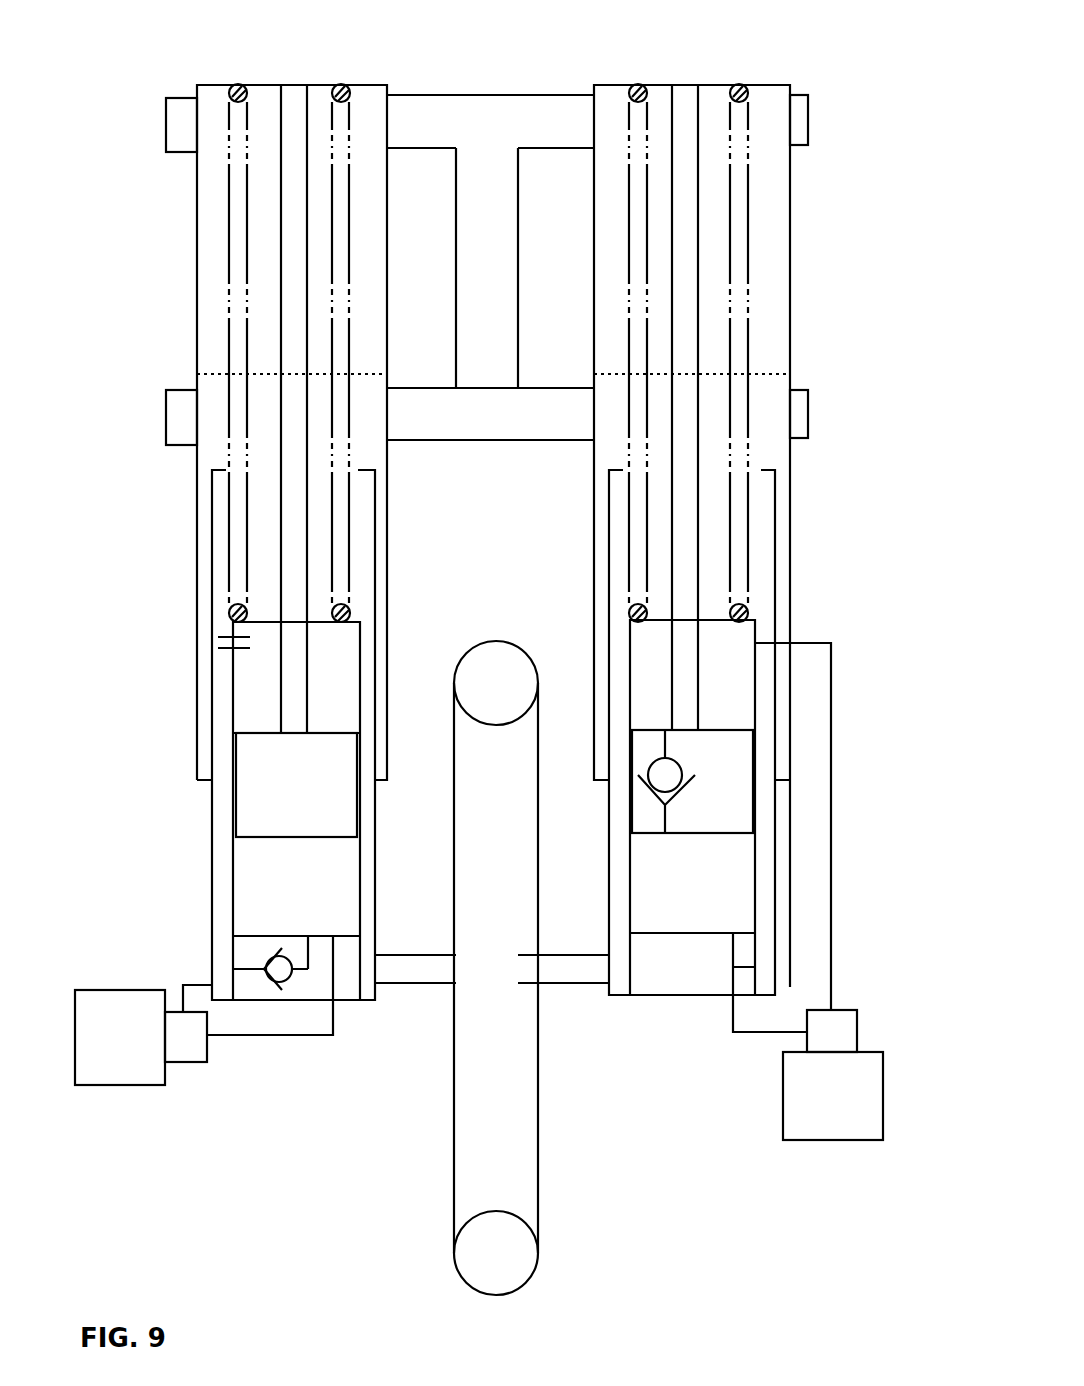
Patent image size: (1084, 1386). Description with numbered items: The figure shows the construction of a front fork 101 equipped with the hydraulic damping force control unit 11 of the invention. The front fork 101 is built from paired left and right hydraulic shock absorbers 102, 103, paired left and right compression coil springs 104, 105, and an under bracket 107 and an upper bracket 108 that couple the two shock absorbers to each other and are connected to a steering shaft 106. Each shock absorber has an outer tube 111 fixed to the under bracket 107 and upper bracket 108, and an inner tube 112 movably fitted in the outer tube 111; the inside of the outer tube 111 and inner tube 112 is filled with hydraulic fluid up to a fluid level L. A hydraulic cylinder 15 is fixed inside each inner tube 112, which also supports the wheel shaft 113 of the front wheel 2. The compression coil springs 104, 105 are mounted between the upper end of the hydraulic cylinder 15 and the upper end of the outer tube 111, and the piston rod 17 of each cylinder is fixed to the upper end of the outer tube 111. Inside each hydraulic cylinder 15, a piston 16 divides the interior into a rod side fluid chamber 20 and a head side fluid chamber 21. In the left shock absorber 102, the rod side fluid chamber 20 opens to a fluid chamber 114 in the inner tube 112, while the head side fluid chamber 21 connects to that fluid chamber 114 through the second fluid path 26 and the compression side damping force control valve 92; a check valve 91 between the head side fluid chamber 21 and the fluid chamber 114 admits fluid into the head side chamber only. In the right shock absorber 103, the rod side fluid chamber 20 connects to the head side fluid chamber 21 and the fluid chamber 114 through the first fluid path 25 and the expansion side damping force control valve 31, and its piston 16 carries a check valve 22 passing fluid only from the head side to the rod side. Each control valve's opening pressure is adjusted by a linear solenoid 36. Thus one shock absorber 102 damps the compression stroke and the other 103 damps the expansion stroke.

The front wheel 2 is at (454, 1255).
The hydraulic damping force control unit 11 is at (147, 1121).
The hydraulic cylinder 15 is at (233, 687).
The piston 16 is at (261, 838).
The piston rod 17 is at (352, 538).
The rod side fluid chamber 20 is at (351, 698).
The head side fluid chamber 21 is at (306, 906).
The check valve 22 is at (638, 787).
The first fluid path 25 is at (837, 910).
The second fluid path 26 is at (298, 1043).
The expansion side damping force control valve 31 is at (862, 1035).
The linear solenoid 36 is at (108, 986).
The check valve 91 is at (282, 985).
The compression side damping force control valve 92 is at (183, 1066).
The front fork 101 is at (812, 70).
The left hydraulic shock absorber 102 is at (194, 320).
The right hydraulic shock absorber 103 is at (793, 285).
The left compression coil spring 104 is at (237, 100).
The right compression coil spring 105 is at (741, 100).
The steering shaft 106 is at (518, 250).
The under bracket 107 is at (808, 417).
The upper bracket 108 is at (808, 114).
The outer tube 111 is at (197, 233).
The inner tube 112 is at (212, 500).
The wheel shaft 113 is at (405, 985).
The fluid chamber 114 is at (260, 535).
The fluid level L is at (212, 374).